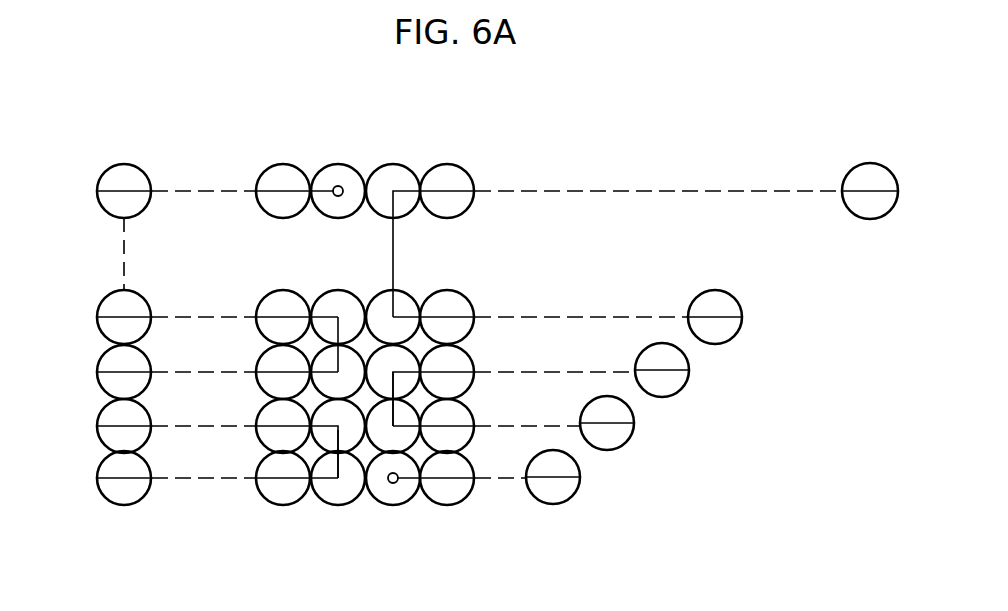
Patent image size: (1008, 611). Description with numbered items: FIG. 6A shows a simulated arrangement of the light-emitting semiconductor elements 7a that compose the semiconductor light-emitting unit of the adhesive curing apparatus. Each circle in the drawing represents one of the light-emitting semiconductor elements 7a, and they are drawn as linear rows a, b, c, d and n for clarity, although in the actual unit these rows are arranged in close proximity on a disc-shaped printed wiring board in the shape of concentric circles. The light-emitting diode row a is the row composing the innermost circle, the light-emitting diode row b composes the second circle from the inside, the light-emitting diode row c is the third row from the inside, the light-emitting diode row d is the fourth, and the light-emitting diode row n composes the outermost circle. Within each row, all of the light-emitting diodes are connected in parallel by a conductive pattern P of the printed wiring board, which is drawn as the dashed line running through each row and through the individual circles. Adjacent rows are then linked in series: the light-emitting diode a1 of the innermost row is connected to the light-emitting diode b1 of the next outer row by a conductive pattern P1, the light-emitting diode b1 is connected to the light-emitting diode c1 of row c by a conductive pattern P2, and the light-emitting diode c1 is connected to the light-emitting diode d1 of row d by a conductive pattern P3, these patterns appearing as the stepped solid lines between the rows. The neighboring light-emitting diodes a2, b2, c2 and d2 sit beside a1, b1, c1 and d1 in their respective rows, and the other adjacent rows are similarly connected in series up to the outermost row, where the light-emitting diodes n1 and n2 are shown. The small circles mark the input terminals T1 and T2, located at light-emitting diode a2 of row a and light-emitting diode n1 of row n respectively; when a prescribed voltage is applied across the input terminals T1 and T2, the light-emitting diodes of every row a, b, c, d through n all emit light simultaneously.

The light-emitting diode row n is at (445, 227).
The light-emitting diode row d is at (368, 317).
The light-emitting diode row c is at (342, 372).
The light-emitting diode row b is at (314, 426).
The light-emitting diode row a is at (288, 478).
The conductive pattern P is at (618, 190).
The light-emitting diode n1 is at (338, 172).
The light-emitting diode n2 is at (393, 172).
The input terminal T2 is at (333, 187).
The light-emitting diode d1 is at (333, 305).
The light-emitting diode d2 is at (400, 303).
The conductive pattern P3 is at (343, 335).
The light-emitting diode c1 is at (320, 361).
The light-emitting diode c2 is at (409, 361).
The light-emitting diode b1 is at (320, 415).
The light-emitting diode b2 is at (409, 415).
The light-emitting diode a1 is at (340, 493).
The light-emitting diode a2 is at (397, 499).
The conductive pattern P1 is at (338, 470).
The conductive pattern P2 is at (388, 408).
The input terminal T1 is at (398, 487).
The light-emitting semiconductor elements 7a is at (733, 416).